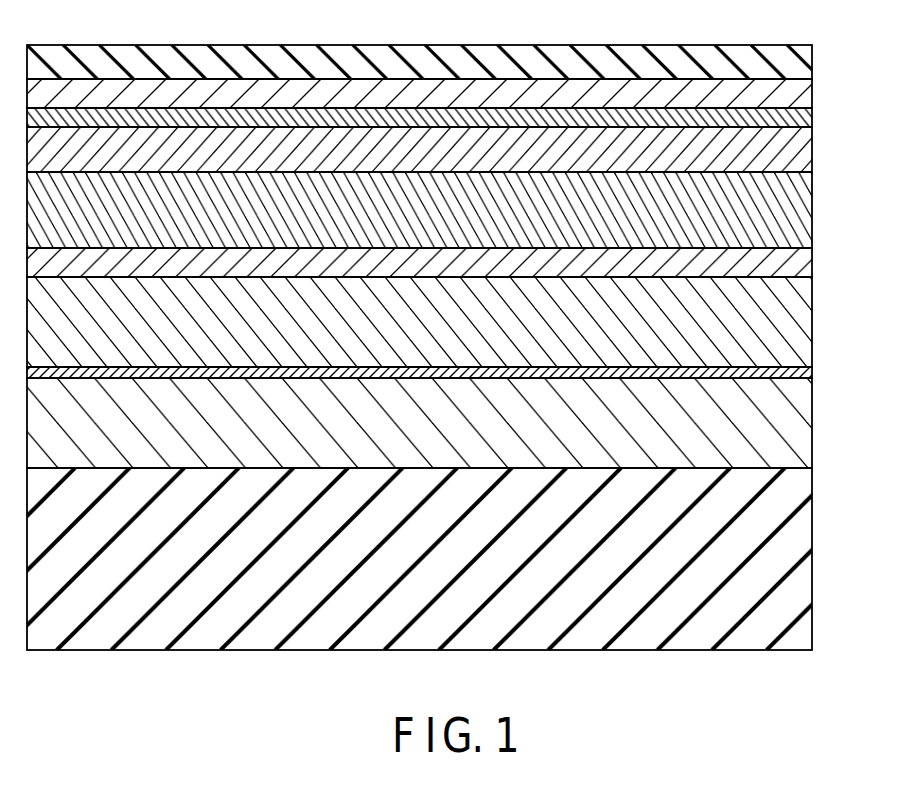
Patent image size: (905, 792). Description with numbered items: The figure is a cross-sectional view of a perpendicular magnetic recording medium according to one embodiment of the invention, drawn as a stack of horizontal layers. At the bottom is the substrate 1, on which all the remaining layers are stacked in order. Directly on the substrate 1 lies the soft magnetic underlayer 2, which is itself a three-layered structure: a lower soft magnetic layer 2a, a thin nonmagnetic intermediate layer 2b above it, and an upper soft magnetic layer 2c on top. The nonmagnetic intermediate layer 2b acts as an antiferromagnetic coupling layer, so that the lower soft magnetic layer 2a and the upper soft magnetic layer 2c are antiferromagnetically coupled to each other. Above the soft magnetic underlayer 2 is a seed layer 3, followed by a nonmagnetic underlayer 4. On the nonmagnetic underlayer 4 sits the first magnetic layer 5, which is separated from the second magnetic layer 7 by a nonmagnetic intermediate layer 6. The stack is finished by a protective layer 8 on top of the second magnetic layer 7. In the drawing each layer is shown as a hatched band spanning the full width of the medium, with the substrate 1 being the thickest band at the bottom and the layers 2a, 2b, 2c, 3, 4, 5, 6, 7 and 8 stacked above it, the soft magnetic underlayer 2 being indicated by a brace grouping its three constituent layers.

The substrate 1 is at (810, 550).
The soft magnetic underlayer 2 is at (465, 372).
The lower soft magnetic layer 2a is at (445, 423).
The nonmagnetic intermediate layer 2b is at (812, 370).
The upper soft magnetic layer 2c is at (806, 318).
The seed layer 3 is at (807, 263).
The nonmagnetic underlayer 4 is at (807, 215).
The first magnetic layer 5 is at (808, 158).
The nonmagnetic intermediate layer 6 is at (807, 117).
The second magnetic layer 7 is at (806, 100).
The protective layer 8 is at (812, 62).